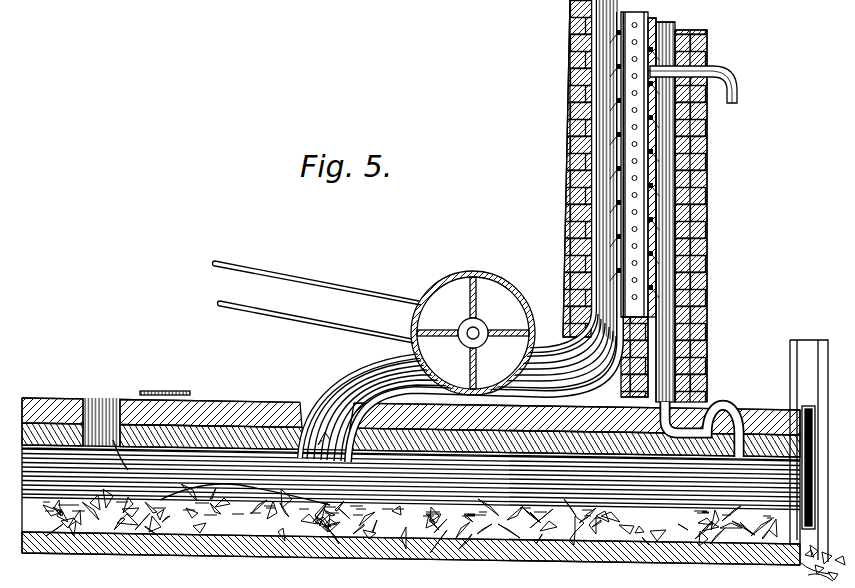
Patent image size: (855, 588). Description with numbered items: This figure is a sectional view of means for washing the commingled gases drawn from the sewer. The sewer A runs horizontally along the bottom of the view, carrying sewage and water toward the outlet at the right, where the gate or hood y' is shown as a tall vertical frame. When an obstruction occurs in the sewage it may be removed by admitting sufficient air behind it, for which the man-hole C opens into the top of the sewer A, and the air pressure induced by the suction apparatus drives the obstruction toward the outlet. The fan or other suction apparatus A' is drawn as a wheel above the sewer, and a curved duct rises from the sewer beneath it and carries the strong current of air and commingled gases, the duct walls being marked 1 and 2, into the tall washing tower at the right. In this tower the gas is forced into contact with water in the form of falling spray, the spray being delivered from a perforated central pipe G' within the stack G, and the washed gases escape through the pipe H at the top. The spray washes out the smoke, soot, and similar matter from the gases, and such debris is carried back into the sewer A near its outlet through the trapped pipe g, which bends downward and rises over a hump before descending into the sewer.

The sewer A is at (411, 413).
The fan or other suction apparatus A' is at (473, 333).
The man-hole C is at (90, 472).
The chimney stack G is at (652, 201).
The perforated pipe G' is at (678, 164).
The discharge pipe H is at (713, 67).
The pipe g is at (704, 417).
The gate or hood y' is at (818, 460).
The duct inner wall 1 is at (324, 403).
The duct outer wall 2 is at (400, 364).